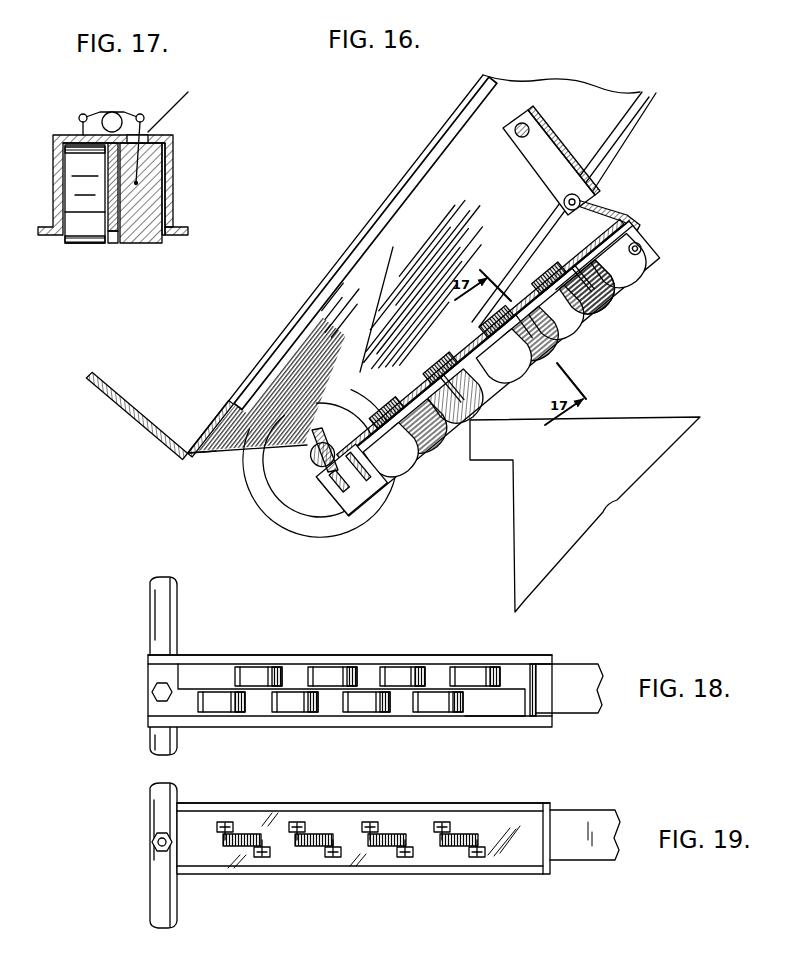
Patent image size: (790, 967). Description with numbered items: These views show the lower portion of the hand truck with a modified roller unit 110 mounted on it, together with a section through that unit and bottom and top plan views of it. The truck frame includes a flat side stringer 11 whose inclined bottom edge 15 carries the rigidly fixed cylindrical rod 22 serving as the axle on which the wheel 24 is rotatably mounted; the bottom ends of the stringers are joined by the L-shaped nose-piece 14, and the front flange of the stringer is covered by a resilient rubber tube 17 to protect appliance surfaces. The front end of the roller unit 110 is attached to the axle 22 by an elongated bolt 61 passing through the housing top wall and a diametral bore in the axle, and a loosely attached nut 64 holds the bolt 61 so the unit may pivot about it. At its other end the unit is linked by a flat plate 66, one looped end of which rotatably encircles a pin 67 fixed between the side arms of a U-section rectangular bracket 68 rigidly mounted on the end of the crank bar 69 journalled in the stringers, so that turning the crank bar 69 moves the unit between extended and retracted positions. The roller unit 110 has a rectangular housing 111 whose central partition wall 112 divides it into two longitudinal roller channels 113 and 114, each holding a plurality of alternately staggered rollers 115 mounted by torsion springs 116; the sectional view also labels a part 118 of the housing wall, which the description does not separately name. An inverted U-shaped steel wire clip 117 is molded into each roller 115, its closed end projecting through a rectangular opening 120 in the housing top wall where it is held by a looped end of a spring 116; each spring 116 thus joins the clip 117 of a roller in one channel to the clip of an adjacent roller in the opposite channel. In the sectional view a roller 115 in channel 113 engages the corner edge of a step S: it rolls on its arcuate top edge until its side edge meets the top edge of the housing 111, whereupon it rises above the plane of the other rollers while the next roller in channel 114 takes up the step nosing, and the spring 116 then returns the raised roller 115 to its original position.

In FIG. 16, the stringer 11 is at (612, 117).
In FIG. 16, the nose-piece 14 is at (157, 420).
In FIG. 16, the inclined bottom edge 15 is at (212, 458).
In FIG. 16, the tube 17 is at (362, 237).
In FIG. 16, the cylindrical rod 22 is at (333, 431).
In FIG. 18, the cylindrical rod 22 is at (158, 628).
In FIG. 19, the cylindrical rod 22 is at (156, 902).
In FIG. 16, the wheel 24 is at (264, 500).
In FIG. 16, the elongated bolt 61 is at (333, 472).
In FIG. 18, the elongated bolt 61 is at (152, 692).
In FIG. 19, the elongated bolt 61 is at (158, 847).
In FIG. 16, the nut 64 is at (316, 443).
In FIG. 19, the nut 64 is at (152, 841).
In FIG. 16, the flat plate 66 is at (606, 210).
In FIG. 18, the flat plate 66 is at (589, 670).
In FIG. 19, the flat plate 66 is at (607, 822).
In FIG. 16, the pin 67 is at (569, 217).
In FIG. 16, the bracket 68 is at (540, 160).
In FIG. 16, the crank bar 69 is at (517, 136).
In FIG. 17, the roller unit 110 is at (123, 177).
In FIG. 16, the roller unit 110 is at (504, 374).
In FIG. 18, the roller unit 110 is at (334, 684).
In FIG. 19, the roller unit 110 is at (328, 837).
In FIG. 17, the housing 111 is at (170, 178).
In FIG. 16, the housing 111 is at (660, 266).
In FIG. 18, the housing 111 is at (304, 660).
In FIG. 19, the housing 111 is at (462, 806).
In FIG. 17, the central partition wall 112 is at (113, 246).
In FIG. 16, the central partition wall 112 is at (633, 286).
In FIG. 18, the central partition wall 112 is at (192, 690).
In FIG. 17, the roller channel 113 is at (170, 240).
In FIG. 18, the roller channel 113 is at (518, 665).
In FIG. 17, the roller channel 114 is at (63, 236).
In FIG. 18, the roller channel 114 is at (512, 710).
In FIG. 17, the roller 115 is at (163, 242).
In FIG. 16, the roller 115 is at (574, 333).
In FIG. 18, the roller 115 is at (355, 712).
In FIG. 17, the torsion spring 116 is at (114, 112).
In FIG. 19, the torsion spring 116 is at (393, 834).
In FIG. 17, the steel wire clip 117 is at (146, 122).
In FIG. 19, the steel wire clip 117 is at (407, 858).
In FIG. 17, the liner 118 is at (166, 158).
In FIG. 17, the rectangular opening 120 is at (178, 132).
In FIG. 19, the rectangular opening 120 is at (301, 821).
In FIG. 16, the step S is at (660, 418).